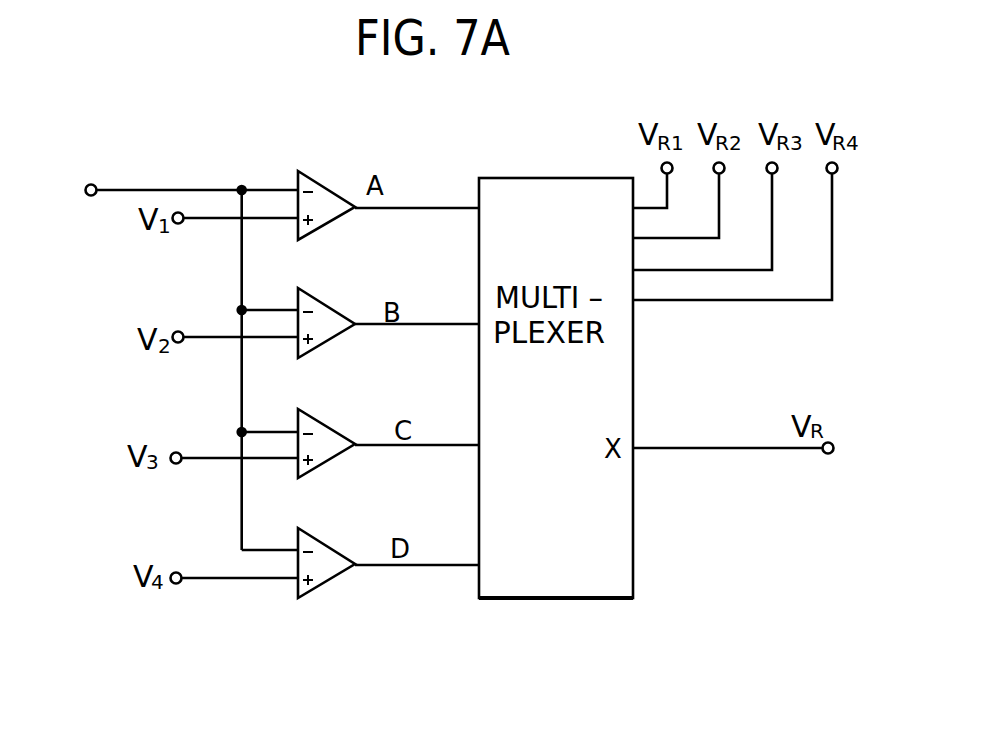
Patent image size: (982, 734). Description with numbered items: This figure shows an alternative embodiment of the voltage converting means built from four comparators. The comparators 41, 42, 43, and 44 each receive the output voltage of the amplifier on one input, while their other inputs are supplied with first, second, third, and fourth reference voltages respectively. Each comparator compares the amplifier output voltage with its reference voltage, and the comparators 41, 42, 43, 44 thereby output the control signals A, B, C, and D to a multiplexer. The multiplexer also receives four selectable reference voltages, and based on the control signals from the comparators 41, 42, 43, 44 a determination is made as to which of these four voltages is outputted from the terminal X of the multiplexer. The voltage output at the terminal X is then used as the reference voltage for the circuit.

The comparator 41 is at (327, 186).
The comparator 42 is at (345, 293).
The comparator 43 is at (332, 425).
The comparator 44 is at (332, 546).